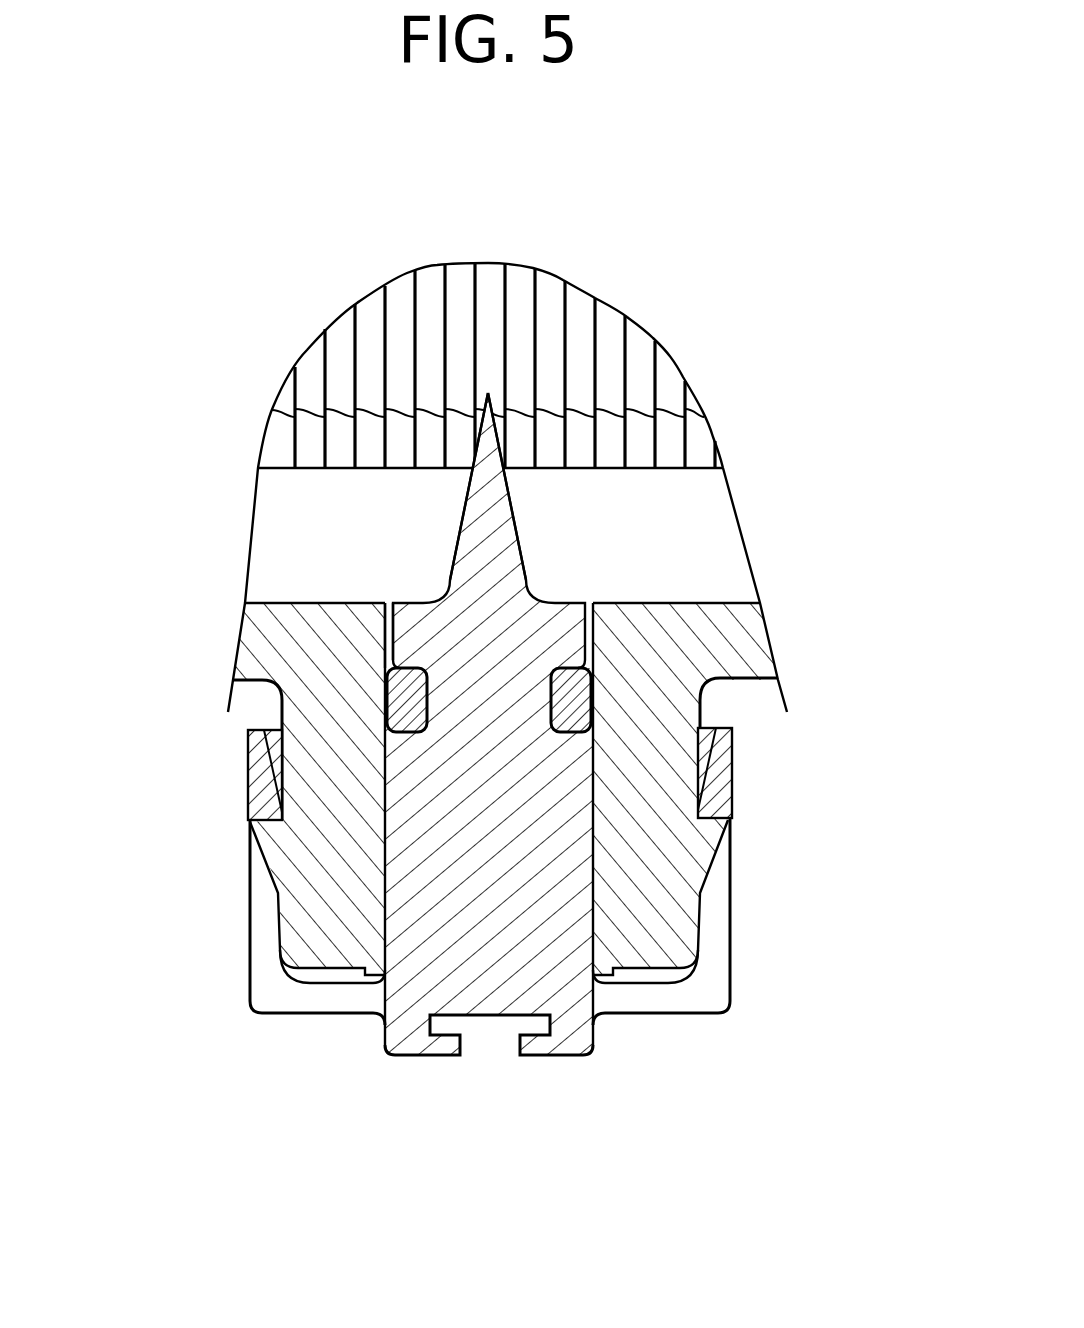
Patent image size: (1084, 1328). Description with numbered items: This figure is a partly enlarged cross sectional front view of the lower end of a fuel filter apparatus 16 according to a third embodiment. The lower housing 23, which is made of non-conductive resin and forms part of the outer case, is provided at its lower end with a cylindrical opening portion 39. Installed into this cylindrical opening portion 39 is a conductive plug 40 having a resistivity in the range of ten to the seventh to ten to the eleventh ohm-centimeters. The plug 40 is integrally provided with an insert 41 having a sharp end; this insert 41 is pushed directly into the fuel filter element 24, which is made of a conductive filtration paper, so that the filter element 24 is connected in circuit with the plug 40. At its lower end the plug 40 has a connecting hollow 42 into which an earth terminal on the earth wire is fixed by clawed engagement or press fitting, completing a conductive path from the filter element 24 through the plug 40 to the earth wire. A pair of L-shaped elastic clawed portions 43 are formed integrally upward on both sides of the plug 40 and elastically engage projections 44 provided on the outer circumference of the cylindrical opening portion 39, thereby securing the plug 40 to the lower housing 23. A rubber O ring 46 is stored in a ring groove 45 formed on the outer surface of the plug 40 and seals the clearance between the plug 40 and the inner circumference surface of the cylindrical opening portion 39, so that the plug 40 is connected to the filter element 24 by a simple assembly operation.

The fuel filter apparatus 16 is at (782, 528).
The lower housing 23 is at (737, 637).
The fuel filter element 24 is at (638, 442).
The cylindrical opening portion 39 is at (658, 927).
The conductive plug 40 is at (533, 777).
The insert 41 is at (497, 403).
The connecting hollow 42 is at (486, 1018).
The elastic clawed portion 43 is at (265, 789).
The projection 44 is at (265, 835).
The ring groove 45 is at (405, 706).
The O ring 46 is at (380, 698).